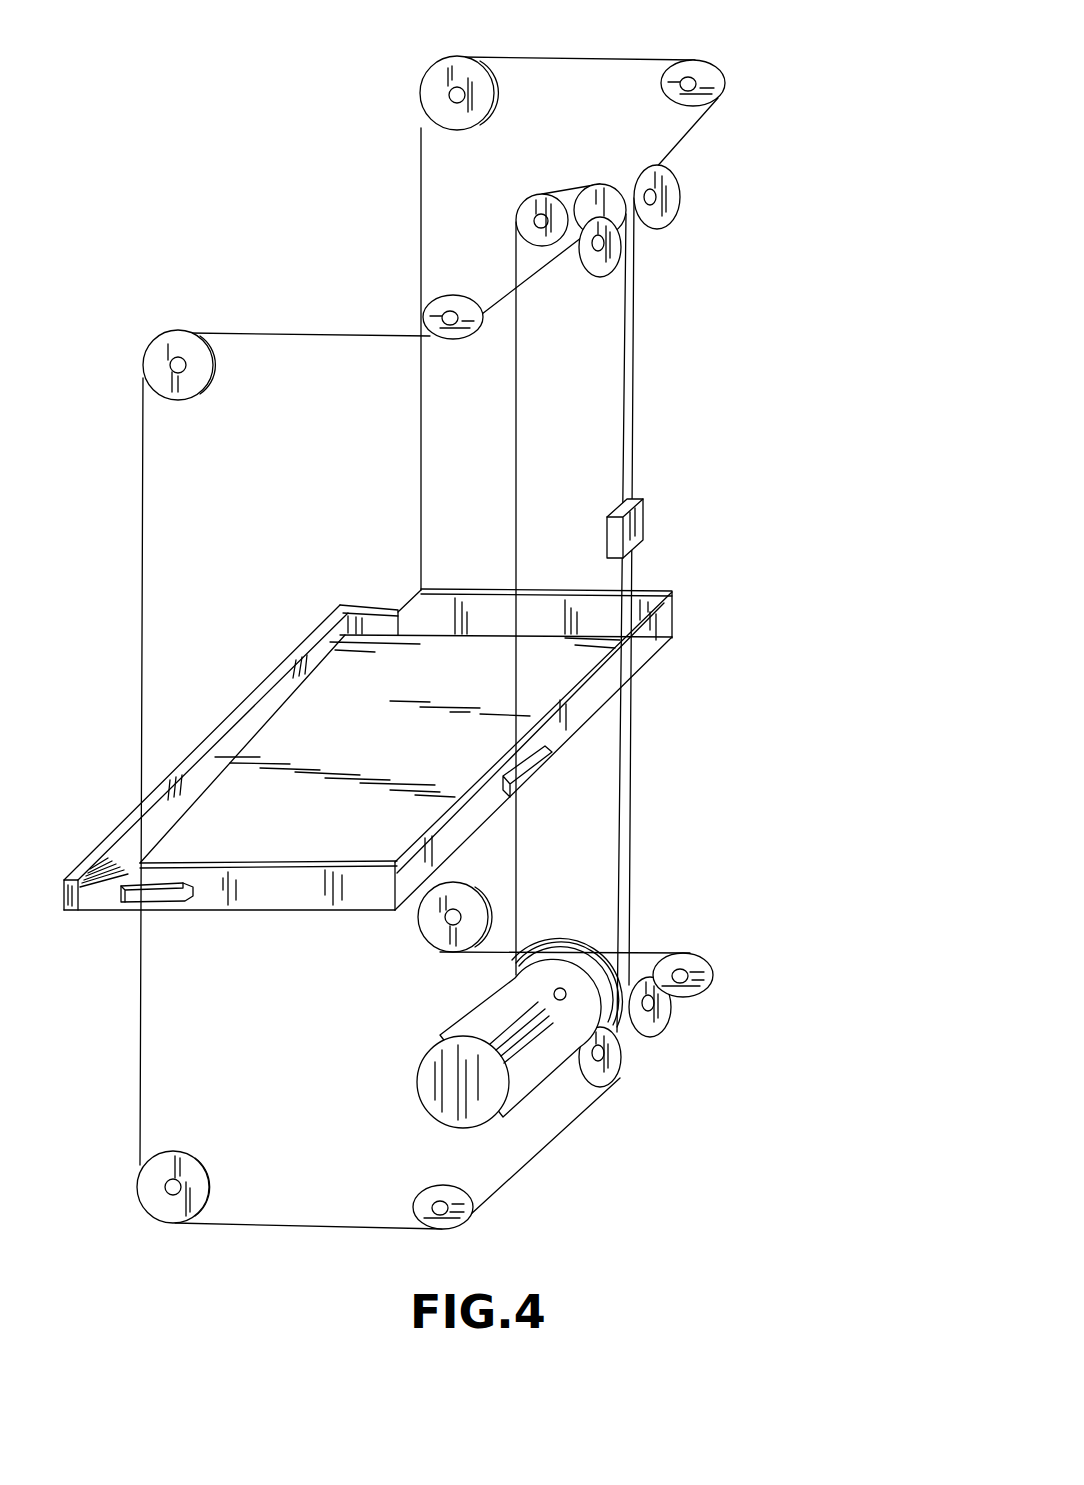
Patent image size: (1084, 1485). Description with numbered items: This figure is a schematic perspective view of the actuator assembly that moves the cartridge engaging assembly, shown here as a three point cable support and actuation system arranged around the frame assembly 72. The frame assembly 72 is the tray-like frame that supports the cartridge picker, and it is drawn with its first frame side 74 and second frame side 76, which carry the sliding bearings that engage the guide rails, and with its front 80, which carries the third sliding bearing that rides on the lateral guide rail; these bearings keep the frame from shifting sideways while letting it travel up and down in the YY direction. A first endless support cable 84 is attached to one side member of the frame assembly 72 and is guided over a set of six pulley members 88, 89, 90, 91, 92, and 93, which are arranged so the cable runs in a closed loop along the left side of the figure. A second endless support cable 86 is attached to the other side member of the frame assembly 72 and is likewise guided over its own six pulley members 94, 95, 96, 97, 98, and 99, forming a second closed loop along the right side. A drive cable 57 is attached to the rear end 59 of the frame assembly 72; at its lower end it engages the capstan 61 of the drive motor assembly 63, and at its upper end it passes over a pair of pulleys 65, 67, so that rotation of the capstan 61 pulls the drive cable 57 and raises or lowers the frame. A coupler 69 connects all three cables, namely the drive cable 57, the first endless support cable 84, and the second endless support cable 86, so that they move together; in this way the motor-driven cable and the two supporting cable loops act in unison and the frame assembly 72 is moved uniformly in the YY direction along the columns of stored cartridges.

The drive cable 57 is at (519, 401).
The rear end 59 is at (650, 673).
The capstan 61 is at (585, 948).
The drive motor assembly 63 is at (448, 1046).
The pulley 65 is at (537, 200).
The pulley 67 is at (611, 190).
The coupler 69 is at (645, 521).
The frame assembly 72 is at (406, 758).
The first frame side 74 is at (222, 862).
The second frame side 76 is at (570, 590).
The front 80 is at (258, 688).
The first endless support cable 84 is at (143, 996).
The second endless support cable 86 is at (421, 421).
The pulley member 88 is at (167, 338).
The pulley member 89 is at (441, 305).
The pulley member 90 is at (592, 270).
The pulley member 91 is at (615, 1072).
The pulley member 92 is at (427, 1200).
The pulley member 93 is at (208, 1175).
The pulley member 94 is at (463, 58).
The pulley member 95 is at (712, 63).
The pulley member 96 is at (680, 201).
The pulley member 97 is at (668, 1030).
The pulley member 98 is at (712, 972).
The pulley member 99 is at (447, 950).